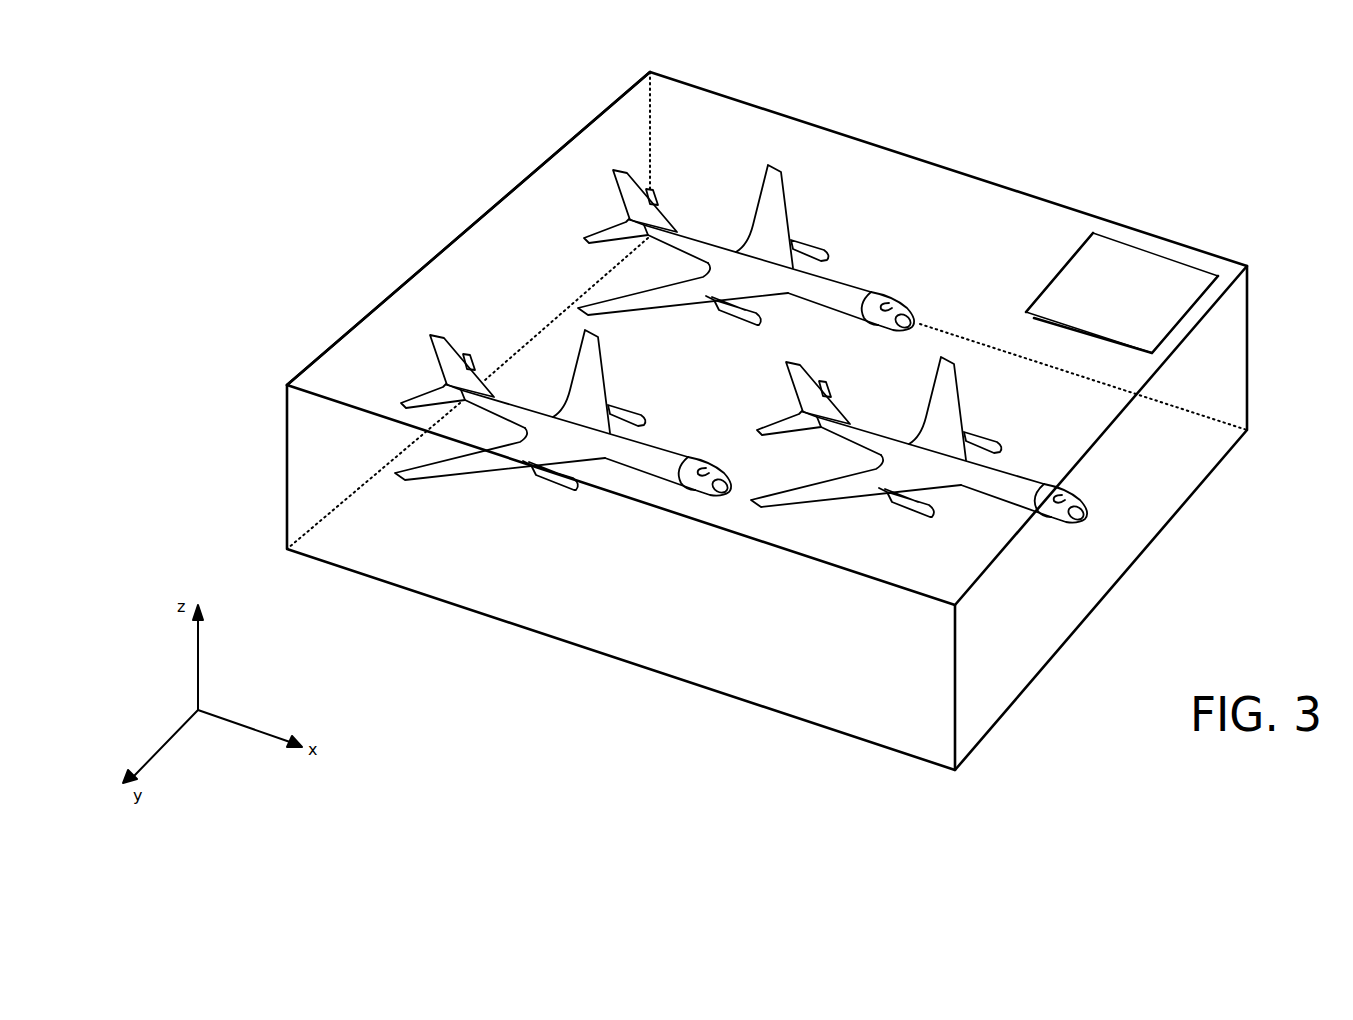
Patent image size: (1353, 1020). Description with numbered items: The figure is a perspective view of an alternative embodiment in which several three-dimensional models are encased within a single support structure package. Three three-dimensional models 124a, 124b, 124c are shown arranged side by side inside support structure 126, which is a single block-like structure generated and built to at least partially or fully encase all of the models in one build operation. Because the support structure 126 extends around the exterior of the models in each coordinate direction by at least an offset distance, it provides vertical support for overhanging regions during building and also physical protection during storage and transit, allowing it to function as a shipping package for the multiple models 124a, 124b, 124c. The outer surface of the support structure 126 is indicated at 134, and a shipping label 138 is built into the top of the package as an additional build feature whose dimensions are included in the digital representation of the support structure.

The 3D model 124a is at (860, 483).
The 3D model 124b is at (477, 463).
The 3D model 124c is at (780, 213).
The support structure 126 is at (1008, 185).
The container top edge / surface 134 is at (550, 167).
The shipping label 138 is at (1177, 270).